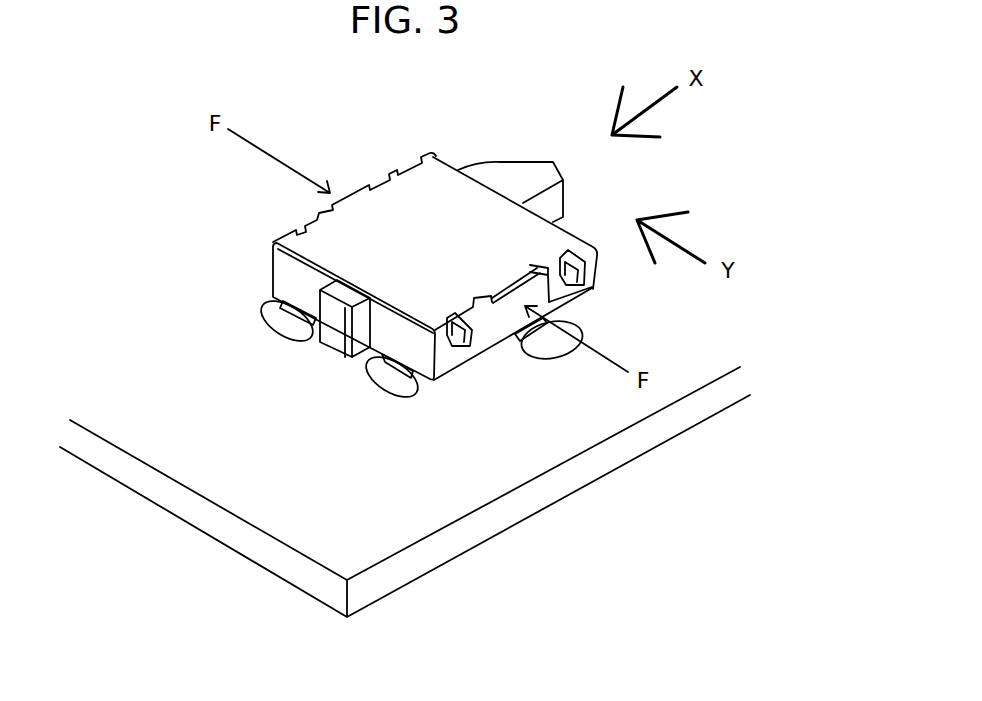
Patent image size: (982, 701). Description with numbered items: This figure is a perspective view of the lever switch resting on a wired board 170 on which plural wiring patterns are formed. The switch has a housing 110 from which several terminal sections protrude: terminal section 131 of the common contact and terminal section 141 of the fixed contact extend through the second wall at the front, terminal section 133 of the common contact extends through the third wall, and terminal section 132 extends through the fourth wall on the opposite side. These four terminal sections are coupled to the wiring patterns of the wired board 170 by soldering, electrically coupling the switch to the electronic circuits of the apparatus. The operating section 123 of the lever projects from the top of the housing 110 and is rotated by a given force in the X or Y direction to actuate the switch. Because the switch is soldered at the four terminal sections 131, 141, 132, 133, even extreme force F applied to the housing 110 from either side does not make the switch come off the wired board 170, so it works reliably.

The housing 110 is at (288, 282).
The operating section 123 is at (513, 168).
The terminal section 131 is at (302, 310).
The terminal section 132 is at (342, 193).
The terminal section 133 is at (534, 331).
The terminal section 141 is at (403, 372).
The wired board 170 is at (492, 522).